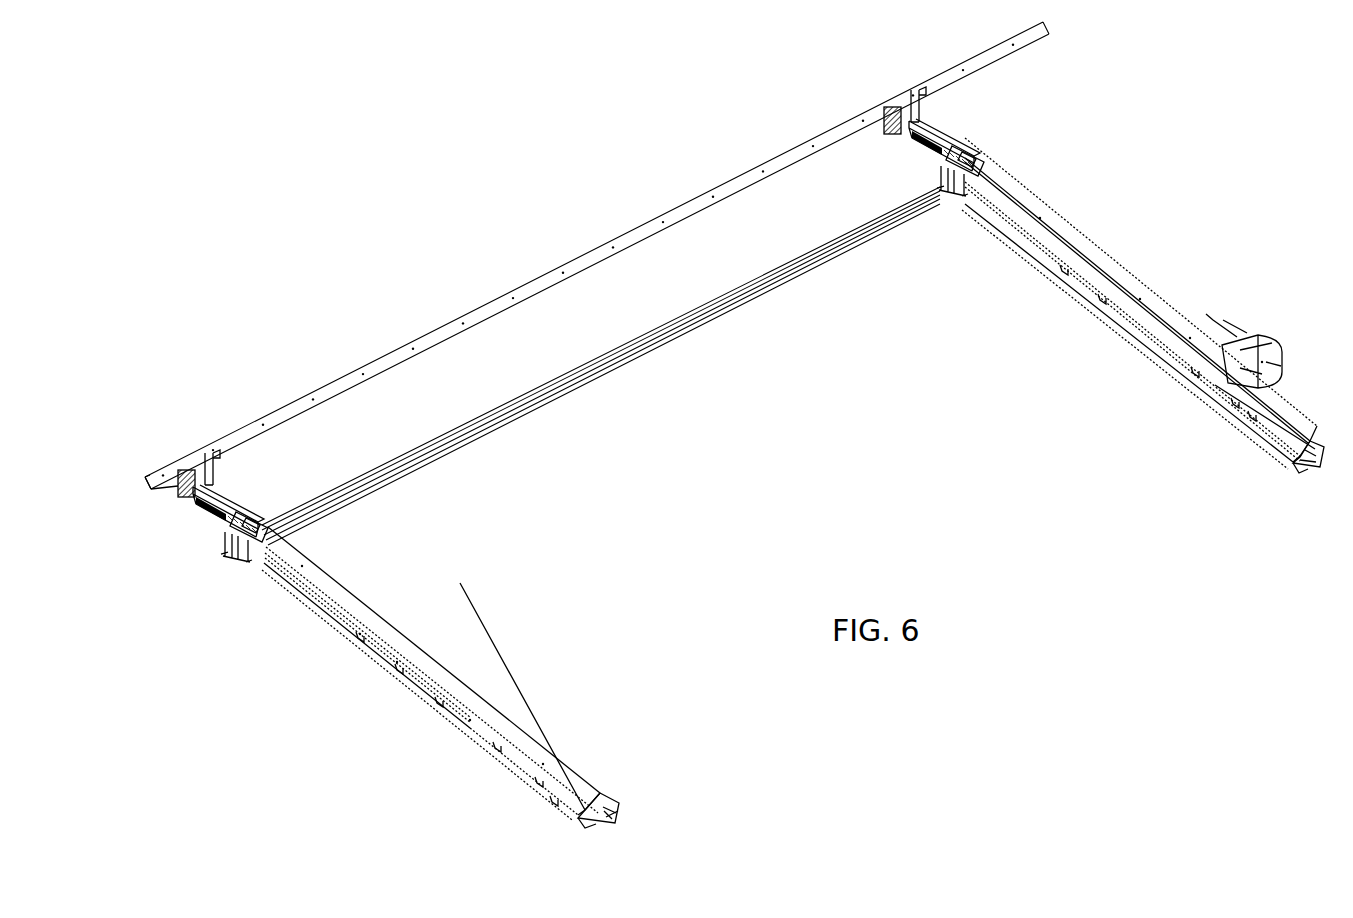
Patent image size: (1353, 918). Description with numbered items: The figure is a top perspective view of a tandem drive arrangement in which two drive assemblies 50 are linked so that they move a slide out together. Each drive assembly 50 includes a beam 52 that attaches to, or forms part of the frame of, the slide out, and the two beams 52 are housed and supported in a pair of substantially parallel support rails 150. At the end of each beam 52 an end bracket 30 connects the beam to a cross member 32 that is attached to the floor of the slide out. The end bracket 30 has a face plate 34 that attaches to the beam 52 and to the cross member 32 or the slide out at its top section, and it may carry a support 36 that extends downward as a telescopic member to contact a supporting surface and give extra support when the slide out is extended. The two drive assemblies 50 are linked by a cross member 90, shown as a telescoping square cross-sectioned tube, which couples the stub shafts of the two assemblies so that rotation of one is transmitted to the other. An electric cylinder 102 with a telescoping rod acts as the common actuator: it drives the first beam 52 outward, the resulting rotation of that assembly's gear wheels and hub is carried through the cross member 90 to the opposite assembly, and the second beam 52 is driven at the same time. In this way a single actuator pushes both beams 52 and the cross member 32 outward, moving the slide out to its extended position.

The drive assembly 50 is at (229, 122).
The end bracket 30 is at (163, 495).
The cross member 32 is at (571, 262).
The face plate 34 is at (180, 508).
The support 36 is at (193, 516).
The beam 52 is at (212, 526).
The cross member 90 is at (608, 368).
The electric cylinder 102 is at (1153, 288).
The support rails 150 is at (393, 628).